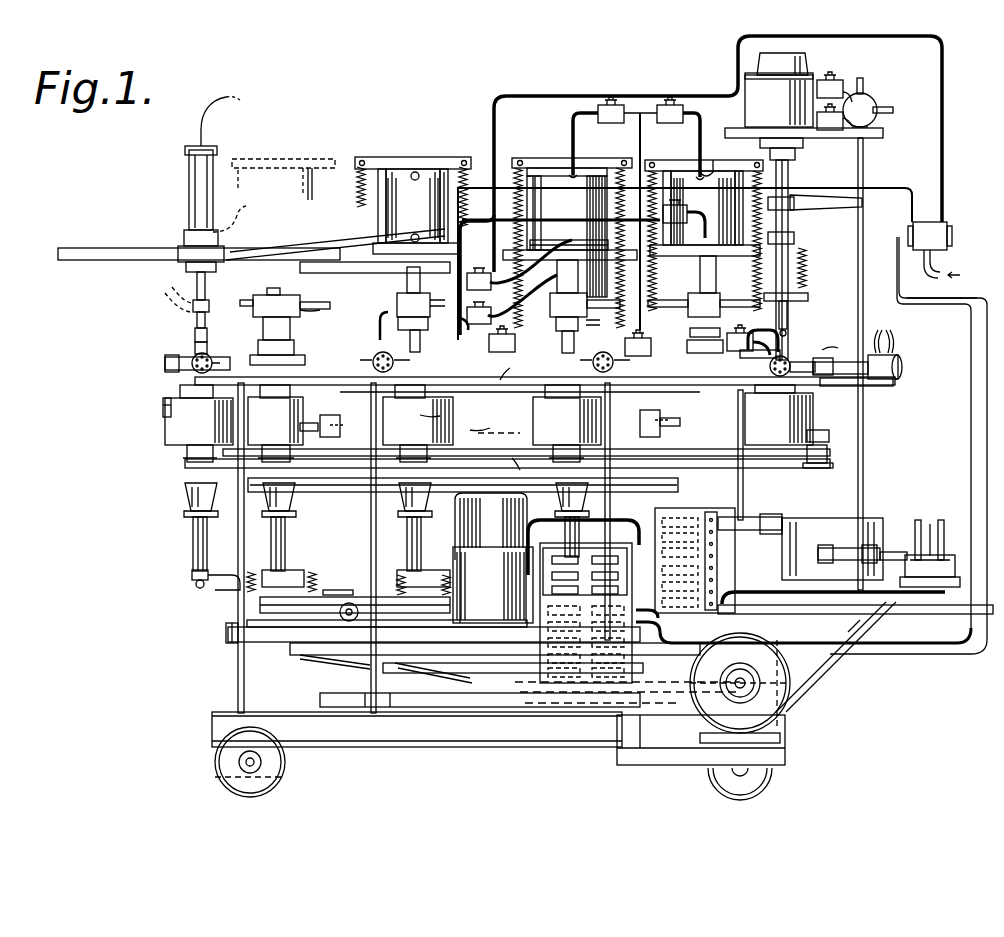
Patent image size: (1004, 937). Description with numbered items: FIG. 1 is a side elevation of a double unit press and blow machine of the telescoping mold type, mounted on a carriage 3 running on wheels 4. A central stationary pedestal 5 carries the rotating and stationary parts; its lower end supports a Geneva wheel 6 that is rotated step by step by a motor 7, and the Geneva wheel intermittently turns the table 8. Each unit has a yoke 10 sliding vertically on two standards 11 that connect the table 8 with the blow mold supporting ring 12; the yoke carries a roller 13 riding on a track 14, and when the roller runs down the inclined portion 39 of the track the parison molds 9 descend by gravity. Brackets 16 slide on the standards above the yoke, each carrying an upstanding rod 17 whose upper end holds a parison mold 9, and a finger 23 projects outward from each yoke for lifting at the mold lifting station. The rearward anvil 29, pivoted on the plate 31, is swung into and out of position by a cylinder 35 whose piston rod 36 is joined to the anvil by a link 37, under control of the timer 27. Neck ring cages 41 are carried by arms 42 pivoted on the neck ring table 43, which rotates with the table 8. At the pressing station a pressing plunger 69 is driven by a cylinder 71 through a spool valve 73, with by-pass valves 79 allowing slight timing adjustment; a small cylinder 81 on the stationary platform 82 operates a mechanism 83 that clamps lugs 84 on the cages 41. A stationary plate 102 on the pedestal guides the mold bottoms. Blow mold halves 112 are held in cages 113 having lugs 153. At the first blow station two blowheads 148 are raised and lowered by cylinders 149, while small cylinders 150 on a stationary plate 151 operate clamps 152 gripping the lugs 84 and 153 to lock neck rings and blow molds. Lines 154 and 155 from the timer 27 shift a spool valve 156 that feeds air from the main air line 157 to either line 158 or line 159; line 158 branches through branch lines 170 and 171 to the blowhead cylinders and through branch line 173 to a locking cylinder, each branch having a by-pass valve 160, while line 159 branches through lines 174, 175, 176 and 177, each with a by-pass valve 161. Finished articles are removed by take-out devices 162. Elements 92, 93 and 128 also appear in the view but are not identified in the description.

The carriage 3 is at (348, 745).
The wheels 4 is at (216, 762).
The central stationary pedestal 5 is at (493, 558).
The Geneva wheel 6 is at (333, 693).
The motor 7 is at (795, 688).
The table 8 is at (226, 632).
The parison molds 9 is at (185, 497).
The yoke 10 is at (306, 598).
The standards 11 is at (288, 540).
The blow mold supporting ring 12 is at (510, 459).
The roller 13 is at (345, 618).
The track 14 is at (735, 572).
The brackets 16 is at (257, 572).
The upstanding rod 17 is at (193, 536).
The finger 23 is at (224, 592).
The timer 27 is at (640, 648).
The rearward anvil 29 is at (840, 513).
The plate 31 is at (934, 614).
The cylinder 35 is at (935, 547).
The piston rod 36 is at (893, 547).
The link 37 is at (849, 547).
The inclined portion 39 is at (735, 548).
The neck ring cages 41 is at (258, 348).
The arms 42 is at (298, 336).
The neck ring table 43 is at (511, 363).
The pressing plunger 69 is at (790, 312).
The cylinder 71 is at (804, 106).
The spool valve 73 is at (870, 100).
The by-pass valves 79 is at (836, 80).
The small cylinder 81 is at (903, 364).
The stationary platform 82 is at (892, 386).
The mechanism 83 is at (865, 345).
The lugs 84 is at (165, 363).
The collar 92 is at (187, 454).
The support bar 93 is at (185, 466).
The stationary plate 102 is at (491, 523).
The blow mold halves 112 is at (195, 381).
The cages 113 is at (165, 424).
The plate 128 is at (499, 438).
The blowheads 148 is at (700, 344).
The cylinders 149 is at (306, 185).
The small cylinder 150 is at (193, 345).
The stationary plate 151 is at (340, 345).
The clamps 152 is at (678, 423).
The lugs 153 is at (163, 405).
The line 154 is at (970, 448).
The line 155 is at (987, 410).
The spool valve 156 is at (944, 224).
The main air line 157 is at (922, 272).
The line 158 is at (890, 188).
The line 159 is at (944, 150).
The by-pass valve 160 is at (607, 104).
The by-pass valve 161 is at (484, 273).
The take-out devices 162 is at (190, 318).
The branch line 170 is at (700, 140).
The branch line 171 is at (573, 122).
The branch line 173 is at (690, 302).
The branch line 174 is at (584, 241).
The branch line 175 is at (486, 290).
The branch line 176 is at (594, 293).
The branch line 177 is at (455, 326).